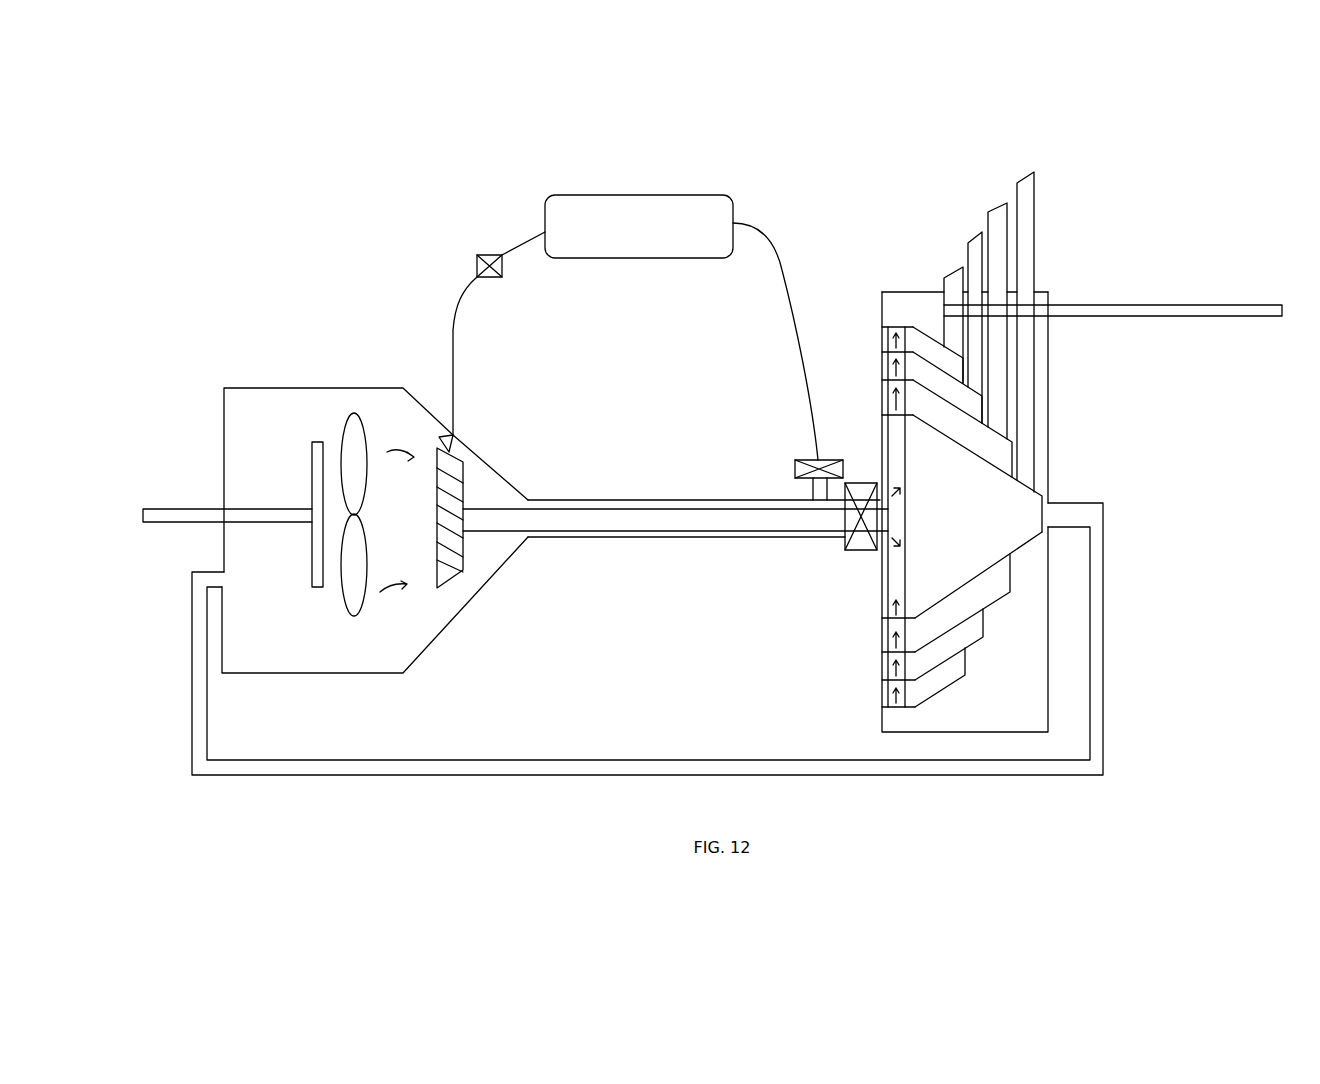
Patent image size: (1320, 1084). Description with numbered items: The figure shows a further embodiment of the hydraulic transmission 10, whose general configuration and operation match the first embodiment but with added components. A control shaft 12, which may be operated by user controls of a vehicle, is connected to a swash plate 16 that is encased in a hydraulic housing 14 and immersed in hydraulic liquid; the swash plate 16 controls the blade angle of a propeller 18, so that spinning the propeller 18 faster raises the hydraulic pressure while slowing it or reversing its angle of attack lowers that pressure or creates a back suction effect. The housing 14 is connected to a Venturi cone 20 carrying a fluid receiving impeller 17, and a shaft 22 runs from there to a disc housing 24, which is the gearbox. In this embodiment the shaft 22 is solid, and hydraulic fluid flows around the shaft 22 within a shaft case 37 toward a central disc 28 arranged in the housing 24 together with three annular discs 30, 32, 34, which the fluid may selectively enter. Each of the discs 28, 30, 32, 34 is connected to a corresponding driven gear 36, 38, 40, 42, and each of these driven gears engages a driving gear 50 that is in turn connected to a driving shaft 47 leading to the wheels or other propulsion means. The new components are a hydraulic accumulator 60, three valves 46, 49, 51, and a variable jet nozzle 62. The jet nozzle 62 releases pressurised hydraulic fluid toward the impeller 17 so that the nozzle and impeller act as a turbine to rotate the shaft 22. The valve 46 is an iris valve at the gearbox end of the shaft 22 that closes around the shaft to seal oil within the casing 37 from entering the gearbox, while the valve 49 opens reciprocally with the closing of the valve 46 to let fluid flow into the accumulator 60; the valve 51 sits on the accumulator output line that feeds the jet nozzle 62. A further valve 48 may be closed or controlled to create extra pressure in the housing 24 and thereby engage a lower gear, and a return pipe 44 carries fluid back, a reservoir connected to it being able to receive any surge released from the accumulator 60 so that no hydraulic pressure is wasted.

The transmission 10 is at (692, 360).
The control shaft 12 is at (166, 495).
The hydraulic housing 14 is at (265, 386).
The swash plate 16 is at (316, 460).
The impeller 17 is at (452, 584).
The propeller 18 is at (360, 418).
The Venturi cone 20 is at (478, 452).
The shaft 22 is at (638, 500).
The disc housing 24 is at (976, 452).
The central disc 28 is at (882, 458).
The annular disc 30 is at (882, 381).
The annular disc 32 is at (882, 353).
The annular disc 34 is at (882, 327).
The driven gear 36 is at (1013, 542).
The shaft case 37 is at (749, 483).
The driven gear 38 is at (1000, 587).
The driven gear 40 is at (972, 630).
The driven gear 42 is at (960, 670).
The return pipe 44 is at (572, 760).
The valve 46 is at (867, 550).
The driving shaft 47 is at (1175, 303).
The valve 48 is at (748, 775).
The valve 49 is at (807, 463).
The driving gear 50 is at (947, 243).
The valve 51 is at (478, 257).
The hydraulic accumulator 60 is at (545, 213).
The variable jet nozzle 62 is at (453, 446).